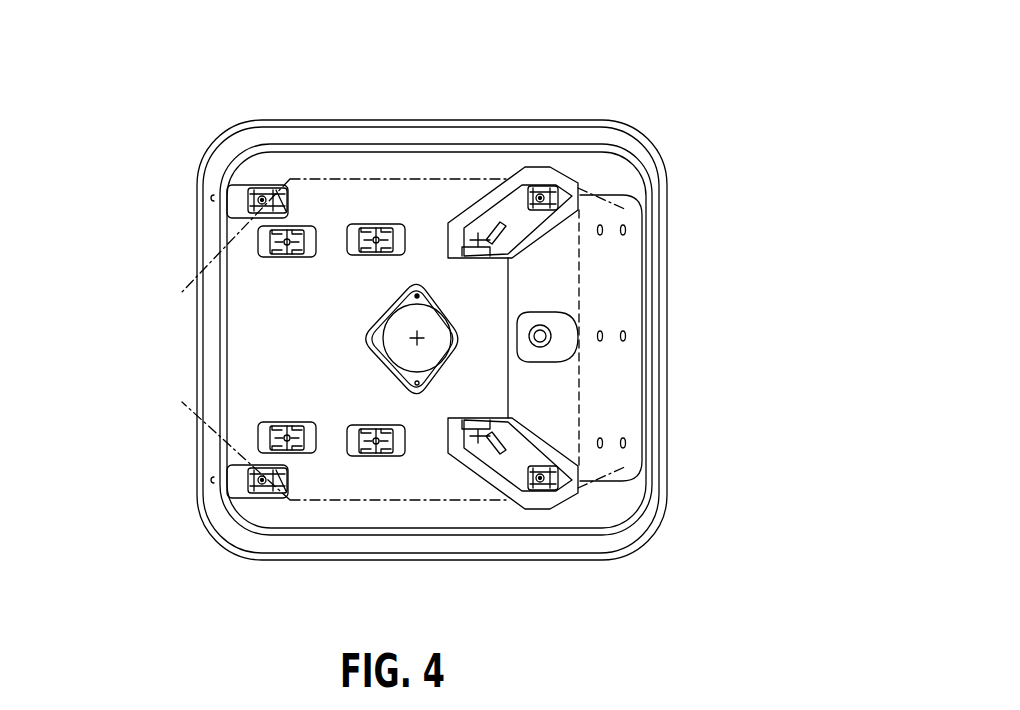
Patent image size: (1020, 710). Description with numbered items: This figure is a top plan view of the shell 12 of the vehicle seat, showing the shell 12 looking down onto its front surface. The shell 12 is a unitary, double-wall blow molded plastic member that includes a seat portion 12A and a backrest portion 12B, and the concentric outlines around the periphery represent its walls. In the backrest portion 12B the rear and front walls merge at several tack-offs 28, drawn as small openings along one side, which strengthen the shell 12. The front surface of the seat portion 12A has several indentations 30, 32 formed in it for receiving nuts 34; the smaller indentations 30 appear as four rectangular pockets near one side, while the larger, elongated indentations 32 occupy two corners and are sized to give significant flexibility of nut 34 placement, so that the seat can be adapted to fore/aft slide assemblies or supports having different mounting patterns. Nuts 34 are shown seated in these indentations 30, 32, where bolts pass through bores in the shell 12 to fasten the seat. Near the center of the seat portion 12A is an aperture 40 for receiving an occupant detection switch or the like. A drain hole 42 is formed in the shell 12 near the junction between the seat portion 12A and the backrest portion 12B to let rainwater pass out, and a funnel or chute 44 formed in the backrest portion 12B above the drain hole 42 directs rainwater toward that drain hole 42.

The shell 12 is at (694, 133).
The seat portion 12A is at (202, 168).
The backrest portion 12B is at (668, 258).
The tack-offs 28 is at (625, 338).
The indentations 30 is at (258, 468).
The indentations 32 is at (562, 172).
The nuts 34 is at (525, 187).
The aperture 40 is at (442, 347).
The drain hole 42 is at (550, 340).
The funnel or chute 44 is at (562, 317).